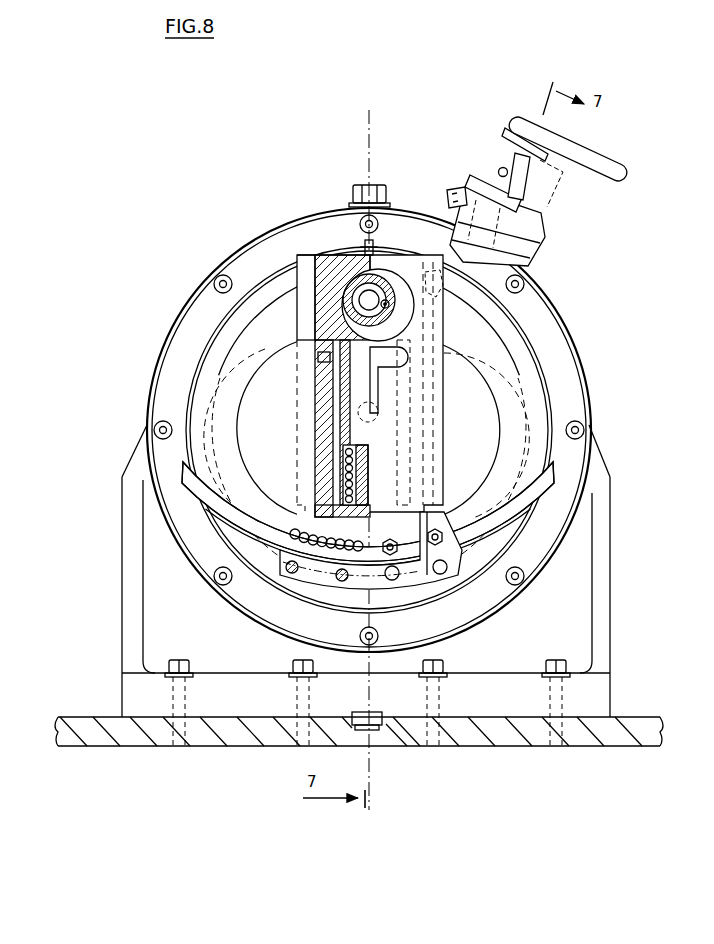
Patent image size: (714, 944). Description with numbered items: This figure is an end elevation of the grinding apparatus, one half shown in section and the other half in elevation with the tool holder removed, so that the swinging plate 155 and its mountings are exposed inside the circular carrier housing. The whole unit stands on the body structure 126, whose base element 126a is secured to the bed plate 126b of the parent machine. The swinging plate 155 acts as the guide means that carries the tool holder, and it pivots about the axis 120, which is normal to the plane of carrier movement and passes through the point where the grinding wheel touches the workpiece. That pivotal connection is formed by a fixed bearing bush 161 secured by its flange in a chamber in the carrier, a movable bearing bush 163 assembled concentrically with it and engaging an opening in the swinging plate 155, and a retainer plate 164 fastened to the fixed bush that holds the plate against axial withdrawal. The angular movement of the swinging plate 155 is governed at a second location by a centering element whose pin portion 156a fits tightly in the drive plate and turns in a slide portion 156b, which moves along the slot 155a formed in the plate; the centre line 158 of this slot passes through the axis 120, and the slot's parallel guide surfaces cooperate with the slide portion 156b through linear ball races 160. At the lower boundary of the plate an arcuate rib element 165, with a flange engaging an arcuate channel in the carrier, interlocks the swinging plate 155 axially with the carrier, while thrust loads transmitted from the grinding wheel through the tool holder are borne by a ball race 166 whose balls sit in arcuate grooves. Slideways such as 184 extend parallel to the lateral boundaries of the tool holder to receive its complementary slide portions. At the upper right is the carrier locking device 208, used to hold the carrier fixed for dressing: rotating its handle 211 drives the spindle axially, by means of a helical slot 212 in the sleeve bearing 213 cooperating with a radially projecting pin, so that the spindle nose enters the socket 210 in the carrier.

The axis 120 is at (388, 299).
The body structure 126 is at (619, 523).
The base element 126a is at (598, 693).
The bed plate 126b is at (628, 718).
The swinging plate 155 is at (437, 481).
The slot 155a is at (355, 391).
The pin portion 156a is at (384, 460).
The slide portion 156b is at (352, 481).
The centre line 158 is at (374, 514).
The linear ball races 160 is at (340, 465).
The fixed bearing bush 161 is at (372, 297).
The movable bearing bush 163 is at (363, 293).
The retainer plate 164 is at (392, 283).
The rib element 165 is at (318, 578).
The ball race 166 is at (281, 544).
The slideway 184 is at (447, 352).
The carrier locking device 208 is at (539, 176).
The socket 210 is at (453, 300).
The handle 211 is at (495, 130).
The helical slot 212 is at (503, 172).
The sleeve bearing 213 is at (535, 180).